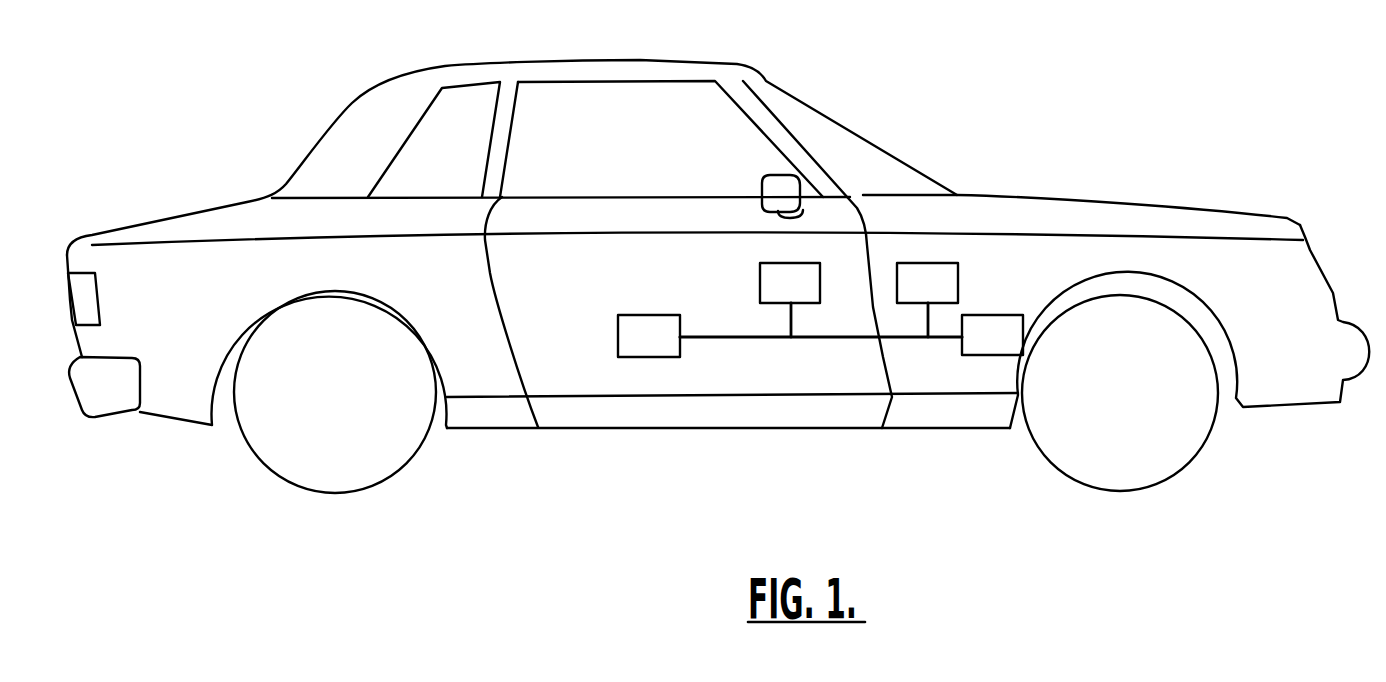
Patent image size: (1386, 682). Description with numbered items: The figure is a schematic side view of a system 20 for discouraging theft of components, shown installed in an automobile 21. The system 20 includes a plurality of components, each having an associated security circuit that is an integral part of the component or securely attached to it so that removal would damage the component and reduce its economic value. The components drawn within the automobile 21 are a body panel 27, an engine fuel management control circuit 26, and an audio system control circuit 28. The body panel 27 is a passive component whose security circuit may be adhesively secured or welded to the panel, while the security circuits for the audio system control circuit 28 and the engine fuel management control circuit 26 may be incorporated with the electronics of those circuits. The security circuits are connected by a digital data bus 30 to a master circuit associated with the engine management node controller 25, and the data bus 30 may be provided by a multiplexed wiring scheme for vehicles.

The system 20 is at (1115, 110).
The automobile 21 is at (1222, 203).
The engine management node controller 25 is at (927, 300).
The engine fuel management control circuit 26 is at (992, 334).
The body panel 27 is at (649, 336).
The audio system control circuit 28 is at (790, 300).
The digital data bus 30 is at (747, 337).